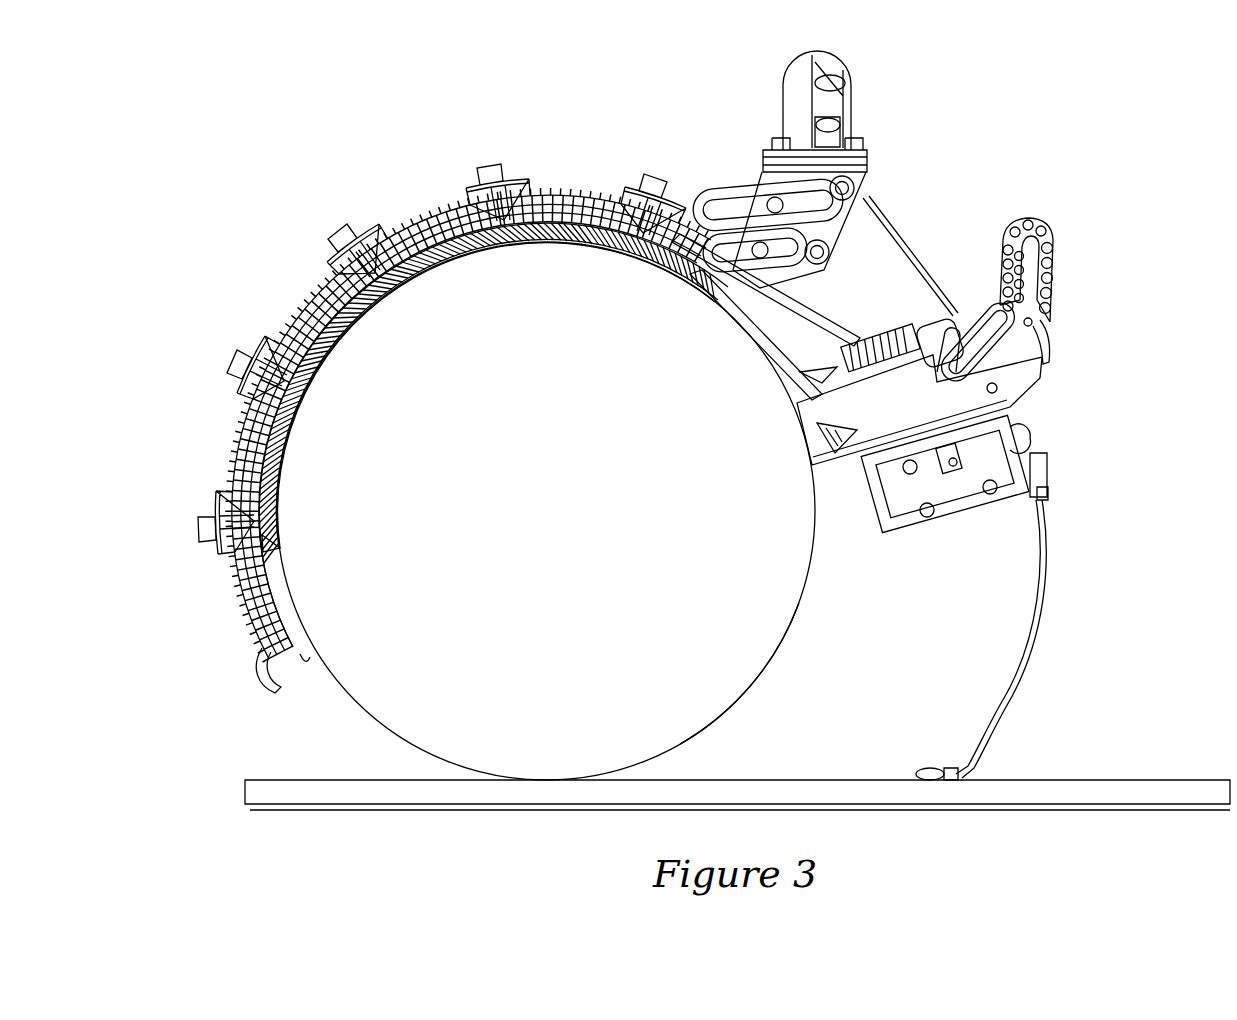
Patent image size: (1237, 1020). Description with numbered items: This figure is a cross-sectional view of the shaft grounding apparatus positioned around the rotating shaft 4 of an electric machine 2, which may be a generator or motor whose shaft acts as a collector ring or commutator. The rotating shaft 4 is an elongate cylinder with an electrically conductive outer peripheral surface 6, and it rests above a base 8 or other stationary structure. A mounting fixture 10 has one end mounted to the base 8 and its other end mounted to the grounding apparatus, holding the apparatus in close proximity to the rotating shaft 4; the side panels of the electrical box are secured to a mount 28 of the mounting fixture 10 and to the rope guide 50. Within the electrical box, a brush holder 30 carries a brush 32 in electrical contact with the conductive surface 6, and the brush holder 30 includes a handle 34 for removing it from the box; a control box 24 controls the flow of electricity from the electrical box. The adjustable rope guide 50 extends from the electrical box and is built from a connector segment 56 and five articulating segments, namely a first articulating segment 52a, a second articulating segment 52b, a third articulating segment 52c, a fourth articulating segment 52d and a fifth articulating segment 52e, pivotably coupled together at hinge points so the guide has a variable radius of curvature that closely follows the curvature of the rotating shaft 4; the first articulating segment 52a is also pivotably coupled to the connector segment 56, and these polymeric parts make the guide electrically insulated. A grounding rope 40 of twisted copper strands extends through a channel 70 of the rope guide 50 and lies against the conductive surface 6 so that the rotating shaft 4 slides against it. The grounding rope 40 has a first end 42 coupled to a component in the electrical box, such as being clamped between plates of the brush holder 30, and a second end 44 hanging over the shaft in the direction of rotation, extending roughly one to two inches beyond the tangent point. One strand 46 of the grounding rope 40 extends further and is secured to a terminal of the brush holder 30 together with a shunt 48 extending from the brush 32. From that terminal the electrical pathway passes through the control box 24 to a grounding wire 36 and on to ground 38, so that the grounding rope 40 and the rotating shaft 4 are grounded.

The electric machine 2 is at (1052, 99).
The rotating shaft 4 is at (415, 695).
The electrically conductive outer peripheral surface 6 is at (778, 650).
The base 8 is at (1185, 783).
The mounting fixture 10 is at (872, 71).
The control box 24 is at (957, 512).
The mount 28 is at (870, 152).
The brush holder 30 is at (943, 307).
The brush 32 is at (805, 418).
The handle 34 is at (1052, 253).
The grounding wire 36 is at (1022, 652).
The ground 38 is at (935, 770).
The grounding rope 40 is at (800, 312).
The first end 42 is at (903, 340).
The second end 44 is at (272, 532).
The strand 46 is at (952, 288).
The shunt 48 is at (1058, 290).
The rope guide 50 is at (665, 161).
The first articulating segment 52a is at (570, 190).
The second articulating segment 52b is at (422, 205).
The third articulating segment 52c is at (297, 313).
The fourth articulating segment 52d is at (228, 438).
The fifth articulating segment 52e is at (245, 605).
The connector segment 56 is at (705, 272).
The channel 70 is at (287, 605).